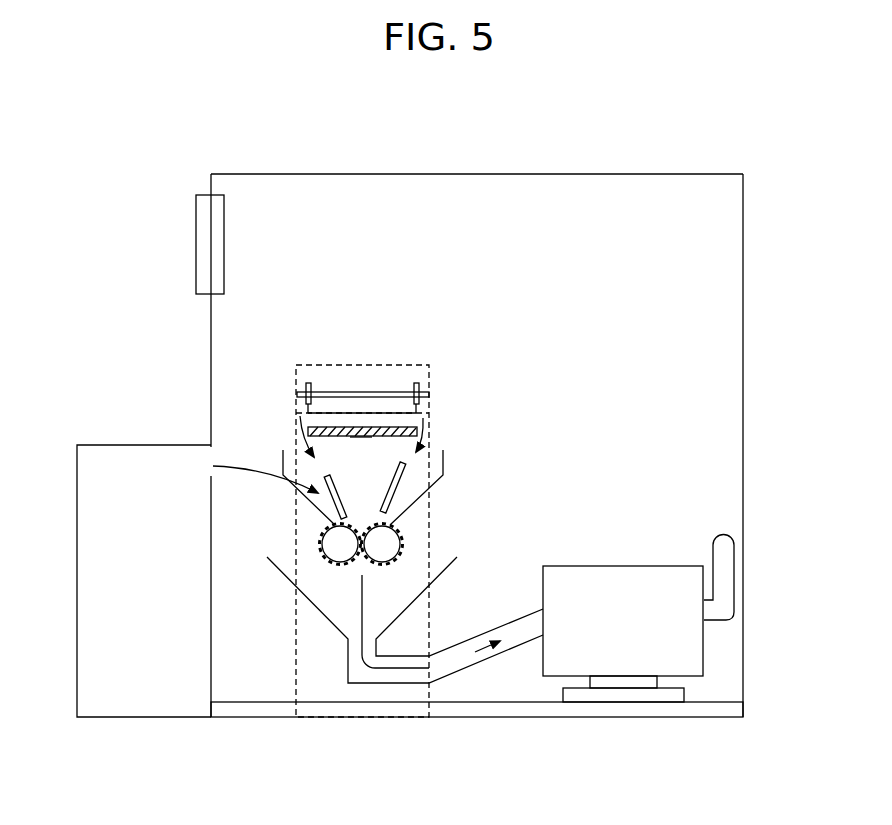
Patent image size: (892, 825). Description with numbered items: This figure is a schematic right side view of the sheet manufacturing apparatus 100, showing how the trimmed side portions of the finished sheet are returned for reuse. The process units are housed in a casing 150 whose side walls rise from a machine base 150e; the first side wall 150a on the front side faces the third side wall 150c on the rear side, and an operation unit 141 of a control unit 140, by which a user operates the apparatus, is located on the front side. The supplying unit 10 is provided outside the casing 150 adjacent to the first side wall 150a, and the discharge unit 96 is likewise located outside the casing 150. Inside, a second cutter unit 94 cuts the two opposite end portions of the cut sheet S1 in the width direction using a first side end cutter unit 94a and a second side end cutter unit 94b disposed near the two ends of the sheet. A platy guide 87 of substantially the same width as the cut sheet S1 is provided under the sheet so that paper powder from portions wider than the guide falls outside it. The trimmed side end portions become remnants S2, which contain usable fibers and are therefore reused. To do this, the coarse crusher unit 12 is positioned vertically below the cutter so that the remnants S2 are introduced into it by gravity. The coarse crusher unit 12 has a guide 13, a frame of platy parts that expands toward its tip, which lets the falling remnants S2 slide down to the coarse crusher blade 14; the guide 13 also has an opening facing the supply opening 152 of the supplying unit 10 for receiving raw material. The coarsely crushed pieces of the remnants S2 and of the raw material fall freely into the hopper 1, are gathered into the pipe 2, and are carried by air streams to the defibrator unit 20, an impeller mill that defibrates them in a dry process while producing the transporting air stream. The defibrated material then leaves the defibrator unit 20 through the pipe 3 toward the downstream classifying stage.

The sheet manufacturing apparatus 100 is at (676, 145).
The casing 150 is at (750, 268).
The first side wall 150a is at (211, 372).
The third side wall 150c is at (744, 338).
The machine base 150e is at (538, 718).
The supply opening 152 is at (210, 458).
The supplying unit 10 is at (92, 470).
The control unit 140 is at (202, 243).
The operation unit 141 is at (210, 244).
The second cutter unit 94 is at (382, 344).
The first side end cutter unit 94a is at (416, 383).
The second side end cutter unit 94b is at (308, 383).
The cut sheet S1 is at (352, 413).
The remnants S2 is at (296, 412).
The discharge unit 96 is at (427, 429).
The platy guide 87 is at (360, 437).
The coarse crusher unit 12 is at (301, 456).
The guide 13 is at (296, 501).
The coarse crusher blade 14 is at (333, 541).
The hopper 1 is at (328, 623).
The pipe 2 is at (358, 665).
The defibrator unit 20 is at (620, 580).
The pipe 3 is at (720, 573).